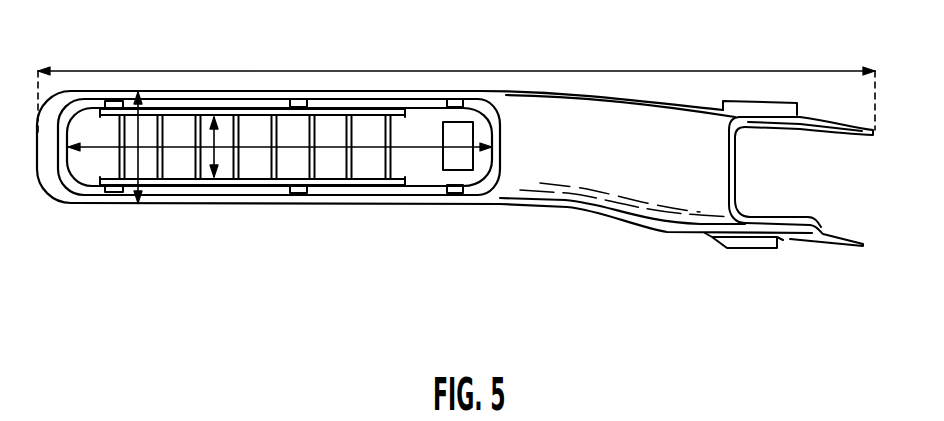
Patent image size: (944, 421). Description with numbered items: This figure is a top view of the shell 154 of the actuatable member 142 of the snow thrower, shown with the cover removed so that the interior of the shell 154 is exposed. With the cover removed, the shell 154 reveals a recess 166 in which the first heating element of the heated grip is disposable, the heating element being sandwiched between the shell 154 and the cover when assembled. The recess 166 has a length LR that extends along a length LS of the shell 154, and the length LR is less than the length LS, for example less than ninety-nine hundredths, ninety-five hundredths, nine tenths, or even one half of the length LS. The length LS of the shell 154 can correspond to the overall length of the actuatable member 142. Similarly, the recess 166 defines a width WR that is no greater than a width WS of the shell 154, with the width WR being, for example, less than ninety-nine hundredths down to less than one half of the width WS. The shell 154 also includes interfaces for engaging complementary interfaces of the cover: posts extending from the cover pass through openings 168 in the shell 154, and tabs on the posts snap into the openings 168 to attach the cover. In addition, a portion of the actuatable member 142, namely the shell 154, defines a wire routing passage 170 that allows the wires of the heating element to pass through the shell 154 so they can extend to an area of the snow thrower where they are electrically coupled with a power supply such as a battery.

The actuatable member 142 is at (517, 195).
The shell 154 is at (707, 222).
The recess 166 is at (232, 176).
The openings 168 is at (453, 188).
The wire routing passage 170 is at (466, 121).
The length of the shell LS is at (388, 70).
The length of the recess LR is at (175, 150).
The width of the shell WS is at (146, 127).
The width of the recess WR is at (217, 128).